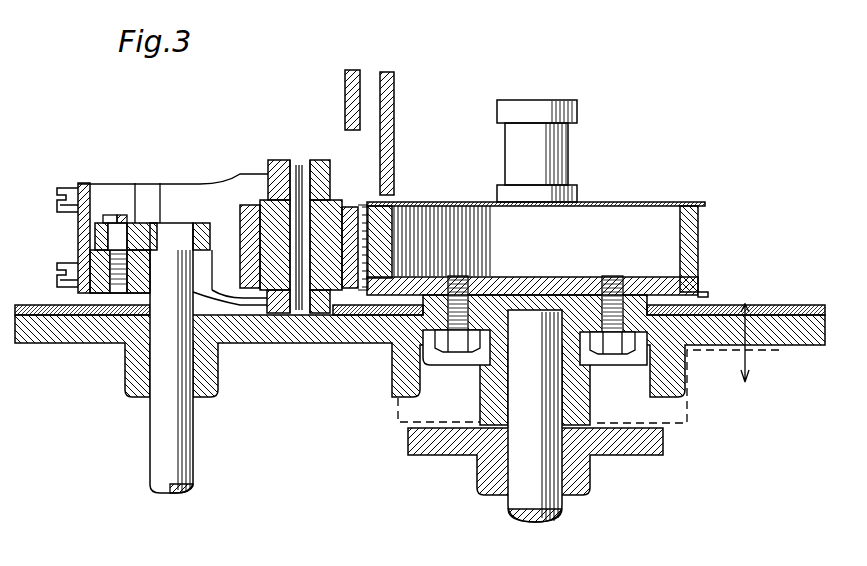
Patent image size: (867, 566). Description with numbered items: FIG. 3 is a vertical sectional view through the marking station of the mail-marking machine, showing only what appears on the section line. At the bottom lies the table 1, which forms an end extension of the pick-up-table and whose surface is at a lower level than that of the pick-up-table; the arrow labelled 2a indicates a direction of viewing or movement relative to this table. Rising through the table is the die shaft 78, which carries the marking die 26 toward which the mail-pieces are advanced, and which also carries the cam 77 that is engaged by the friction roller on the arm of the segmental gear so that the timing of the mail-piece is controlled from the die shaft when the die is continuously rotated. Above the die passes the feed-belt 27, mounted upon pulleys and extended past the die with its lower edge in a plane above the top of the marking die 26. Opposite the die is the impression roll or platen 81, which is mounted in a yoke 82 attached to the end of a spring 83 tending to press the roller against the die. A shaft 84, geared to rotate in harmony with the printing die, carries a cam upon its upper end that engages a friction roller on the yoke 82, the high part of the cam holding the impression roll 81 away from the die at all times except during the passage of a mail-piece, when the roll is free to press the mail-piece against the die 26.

The table 1 is at (770, 311).
The direction of movement 2a is at (769, 342).
The marking die 26 is at (700, 252).
The feed-belt 27 is at (343, 90).
The cam 77 is at (663, 452).
The die shaft 78 is at (540, 516).
The impression roll 81 is at (268, 186).
The yoke 82 is at (218, 176).
The spring 83 is at (77, 233).
The shaft 84 is at (150, 432).